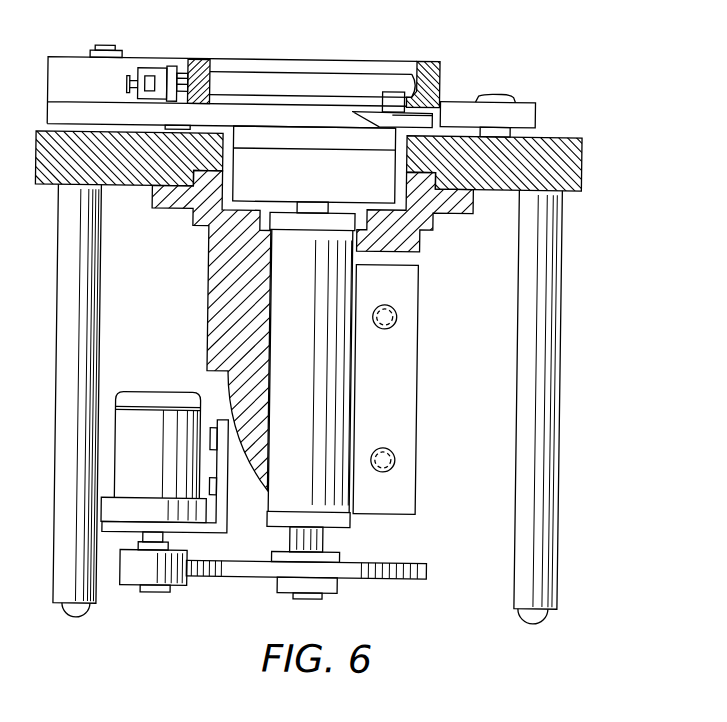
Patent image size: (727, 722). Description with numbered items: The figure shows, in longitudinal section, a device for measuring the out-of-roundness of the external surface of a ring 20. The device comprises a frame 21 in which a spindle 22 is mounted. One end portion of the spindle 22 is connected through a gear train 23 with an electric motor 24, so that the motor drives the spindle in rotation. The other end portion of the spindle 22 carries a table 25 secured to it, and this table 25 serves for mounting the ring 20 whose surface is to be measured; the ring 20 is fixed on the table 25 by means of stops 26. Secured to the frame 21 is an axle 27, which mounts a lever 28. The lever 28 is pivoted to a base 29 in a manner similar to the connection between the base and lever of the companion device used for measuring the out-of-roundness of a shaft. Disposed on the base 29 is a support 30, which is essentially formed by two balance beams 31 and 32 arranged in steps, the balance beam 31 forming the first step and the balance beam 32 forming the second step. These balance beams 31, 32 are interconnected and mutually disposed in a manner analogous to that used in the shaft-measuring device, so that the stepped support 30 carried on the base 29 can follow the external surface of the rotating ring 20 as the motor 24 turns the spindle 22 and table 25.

The ring 20 is at (416, 62).
The frame 21 is at (554, 154).
The spindle 22 is at (343, 403).
The gear train 23 is at (220, 572).
The electric motor 24 is at (143, 402).
The table 25 is at (253, 113).
The stops 26 is at (389, 100).
The axle 27 is at (499, 125).
The lever 28 is at (458, 106).
The base 29 is at (64, 75).
The support 30 is at (169, 60).
The balance beam 31 is at (146, 68).
The balance beam 32 is at (194, 60).